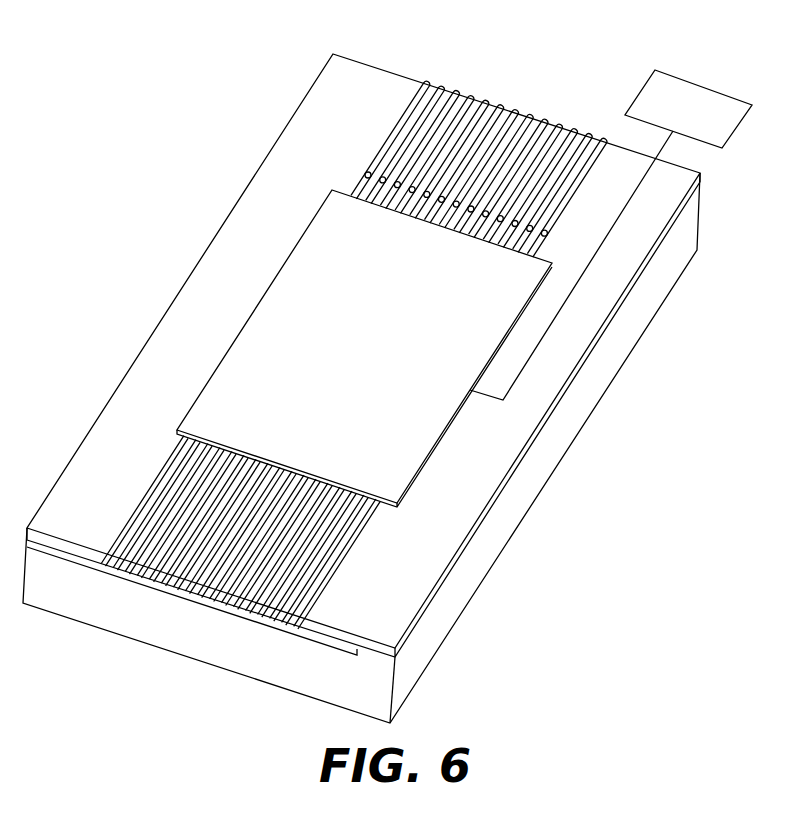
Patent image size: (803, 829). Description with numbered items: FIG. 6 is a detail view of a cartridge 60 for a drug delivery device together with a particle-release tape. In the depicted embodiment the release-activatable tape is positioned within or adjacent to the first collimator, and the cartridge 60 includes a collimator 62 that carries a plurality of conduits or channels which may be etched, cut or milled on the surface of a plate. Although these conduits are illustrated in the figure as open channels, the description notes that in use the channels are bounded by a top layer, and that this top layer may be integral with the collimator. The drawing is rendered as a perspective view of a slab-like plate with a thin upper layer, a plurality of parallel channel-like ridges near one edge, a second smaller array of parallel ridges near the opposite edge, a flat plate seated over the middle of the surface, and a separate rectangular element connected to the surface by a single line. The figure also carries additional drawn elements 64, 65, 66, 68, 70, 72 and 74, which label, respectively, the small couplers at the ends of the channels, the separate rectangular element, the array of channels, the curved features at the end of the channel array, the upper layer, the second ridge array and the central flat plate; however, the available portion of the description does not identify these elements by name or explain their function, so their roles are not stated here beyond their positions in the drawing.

The cartridge 60 is at (141, 150).
The collimator 62 is at (322, 103).
The waveguide couplers 64 is at (397, 178).
The light source 65 is at (703, 87).
The waveguide array 66 is at (546, 128).
The input waveguide 68 is at (545, 234).
The cladding layer 70 is at (611, 377).
The electrode array 72 is at (162, 580).
The chip 74 is at (258, 322).